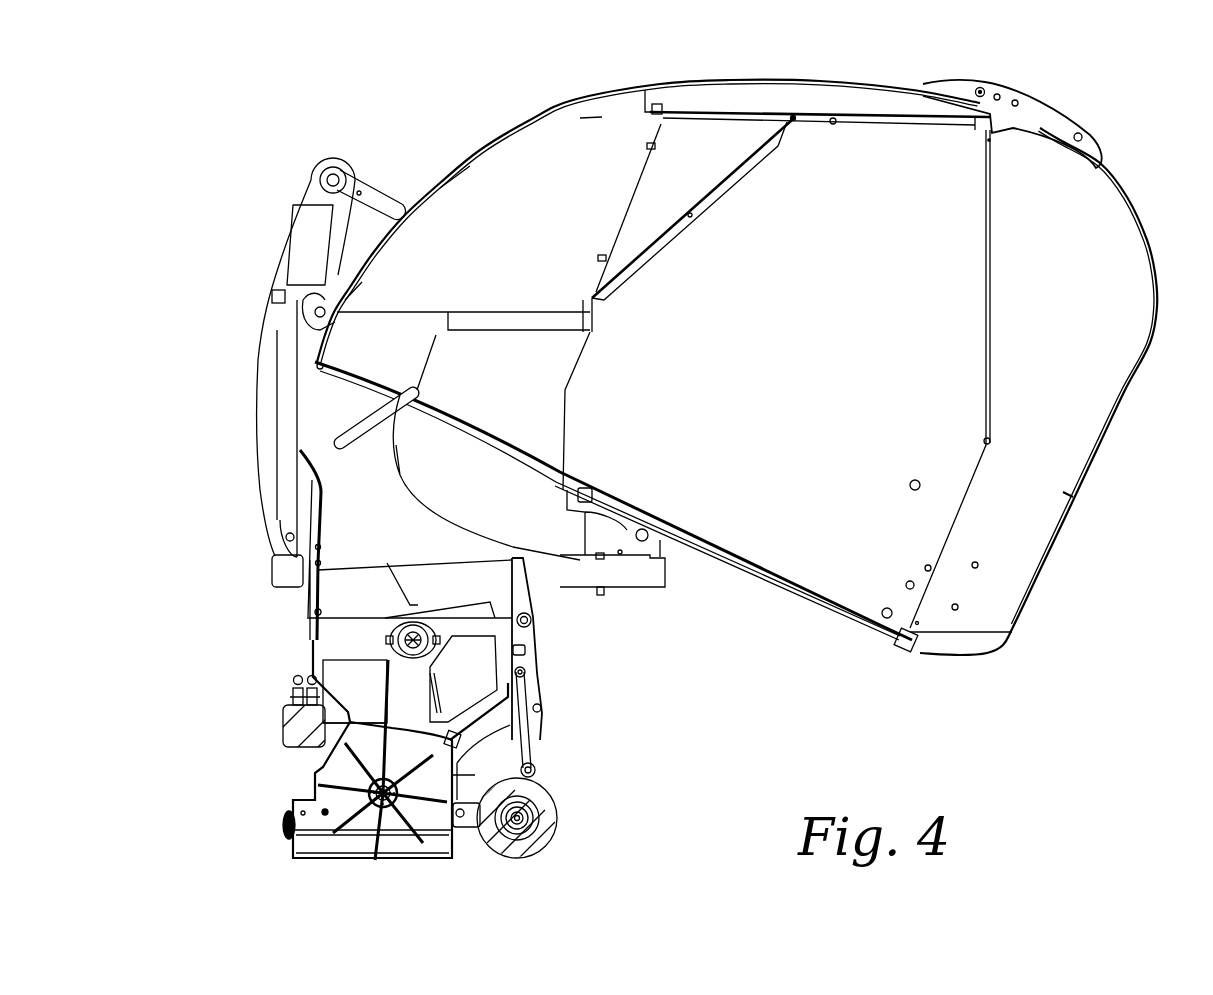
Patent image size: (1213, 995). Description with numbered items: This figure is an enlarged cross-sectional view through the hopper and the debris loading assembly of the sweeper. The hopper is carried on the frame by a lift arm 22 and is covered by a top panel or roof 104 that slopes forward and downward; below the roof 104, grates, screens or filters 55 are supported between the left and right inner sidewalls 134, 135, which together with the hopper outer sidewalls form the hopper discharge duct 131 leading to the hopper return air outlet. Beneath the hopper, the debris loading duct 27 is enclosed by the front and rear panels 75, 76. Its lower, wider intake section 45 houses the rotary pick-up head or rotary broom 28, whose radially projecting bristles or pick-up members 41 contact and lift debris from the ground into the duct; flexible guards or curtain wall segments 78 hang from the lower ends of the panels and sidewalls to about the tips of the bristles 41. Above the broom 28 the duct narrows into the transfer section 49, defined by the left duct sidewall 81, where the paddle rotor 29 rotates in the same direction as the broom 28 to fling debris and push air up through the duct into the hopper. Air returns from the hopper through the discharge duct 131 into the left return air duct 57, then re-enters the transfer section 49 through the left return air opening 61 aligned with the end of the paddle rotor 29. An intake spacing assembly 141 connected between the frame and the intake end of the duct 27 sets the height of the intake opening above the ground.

The top panel or roof 104 is at (727, 77).
The debris grate, screen or filter 55 is at (895, 115).
The left hopper discharge duct 131 is at (513, 163).
The left inner sidewall 134 is at (506, 256).
The right inner sidewall 135 is at (880, 396).
The right lift arm 22 is at (290, 207).
The left return air duct 57 is at (340, 481).
The left duct sidewall 81 is at (347, 512).
The transfer section 49 is at (337, 550).
The left return air opening 61 is at (340, 617).
The debris loading duct 27 is at (297, 641).
The paddle rotor 29 is at (470, 603).
The front panel 75 is at (317, 765).
The rear panel 76 is at (457, 760).
The intake section 45 is at (308, 788).
The intake spacing assembly 141 is at (538, 776).
The flexible guards or curtain wall segments 78 is at (293, 848).
The rotary pick-up head or rotary broom 28 is at (368, 838).
The bristles or pick-up members 41 is at (380, 842).